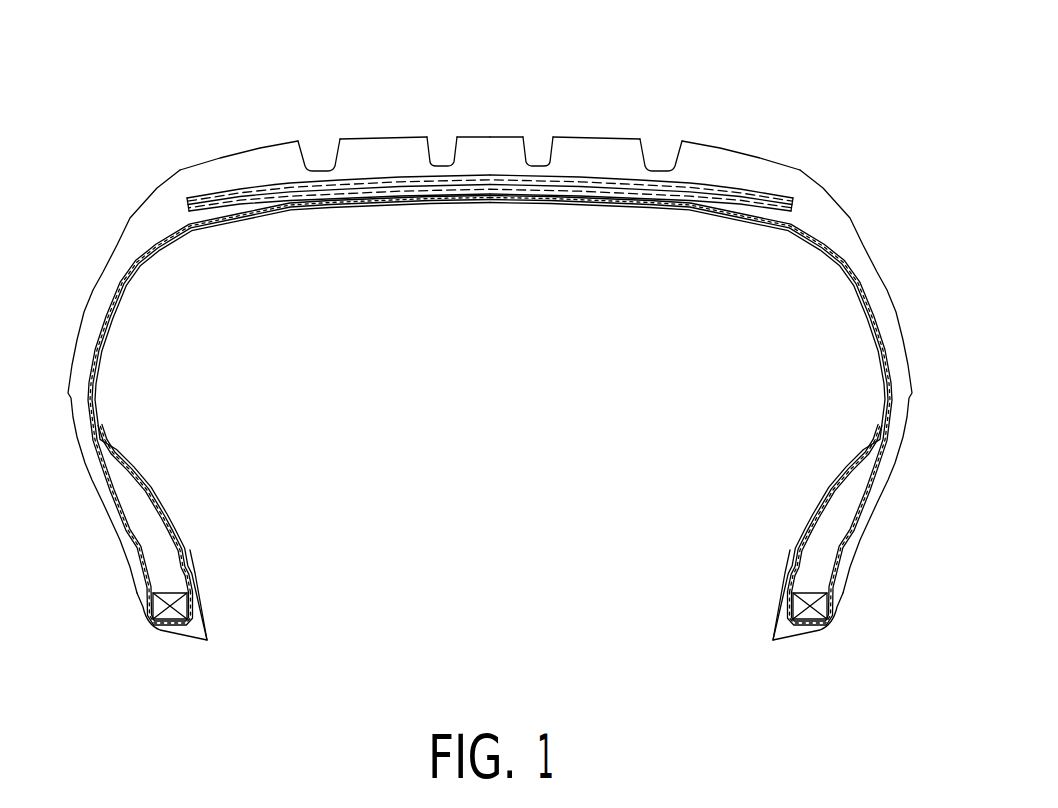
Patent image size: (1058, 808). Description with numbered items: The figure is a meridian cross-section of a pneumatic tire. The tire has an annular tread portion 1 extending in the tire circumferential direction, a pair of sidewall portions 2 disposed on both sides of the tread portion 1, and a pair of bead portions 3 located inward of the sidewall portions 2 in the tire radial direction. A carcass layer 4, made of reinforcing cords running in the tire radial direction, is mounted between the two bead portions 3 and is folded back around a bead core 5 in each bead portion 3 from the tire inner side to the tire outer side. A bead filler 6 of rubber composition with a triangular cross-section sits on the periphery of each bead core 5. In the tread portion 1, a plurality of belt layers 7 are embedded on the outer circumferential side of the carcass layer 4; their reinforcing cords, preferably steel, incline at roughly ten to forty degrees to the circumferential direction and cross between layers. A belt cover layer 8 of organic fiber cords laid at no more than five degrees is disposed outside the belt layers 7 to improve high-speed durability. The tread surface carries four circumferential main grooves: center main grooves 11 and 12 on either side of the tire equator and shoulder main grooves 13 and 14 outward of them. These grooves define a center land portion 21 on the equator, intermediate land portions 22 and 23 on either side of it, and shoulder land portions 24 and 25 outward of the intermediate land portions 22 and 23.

The tread portion 1 is at (623, 138).
The sidewall portion 2 is at (83, 318).
The bead portion 3 is at (137, 593).
The carcass layer 4 is at (828, 247).
The bead core 5 is at (178, 604).
The bead filler 6 is at (163, 564).
The belt layer 7 is at (652, 180).
The belt cover layer 8 is at (256, 180).
The center main groove 11 is at (436, 137).
The center main groove 12 is at (540, 137).
The shoulder main groove 13 is at (312, 137).
The shoulder main groove 14 is at (660, 137).
The center land portion 21 is at (503, 137).
The intermediate land portion 22 is at (377, 137).
The intermediate land portion 23 is at (600, 137).
The shoulder land portion 24 is at (240, 137).
The shoulder land portion 25 is at (773, 165).